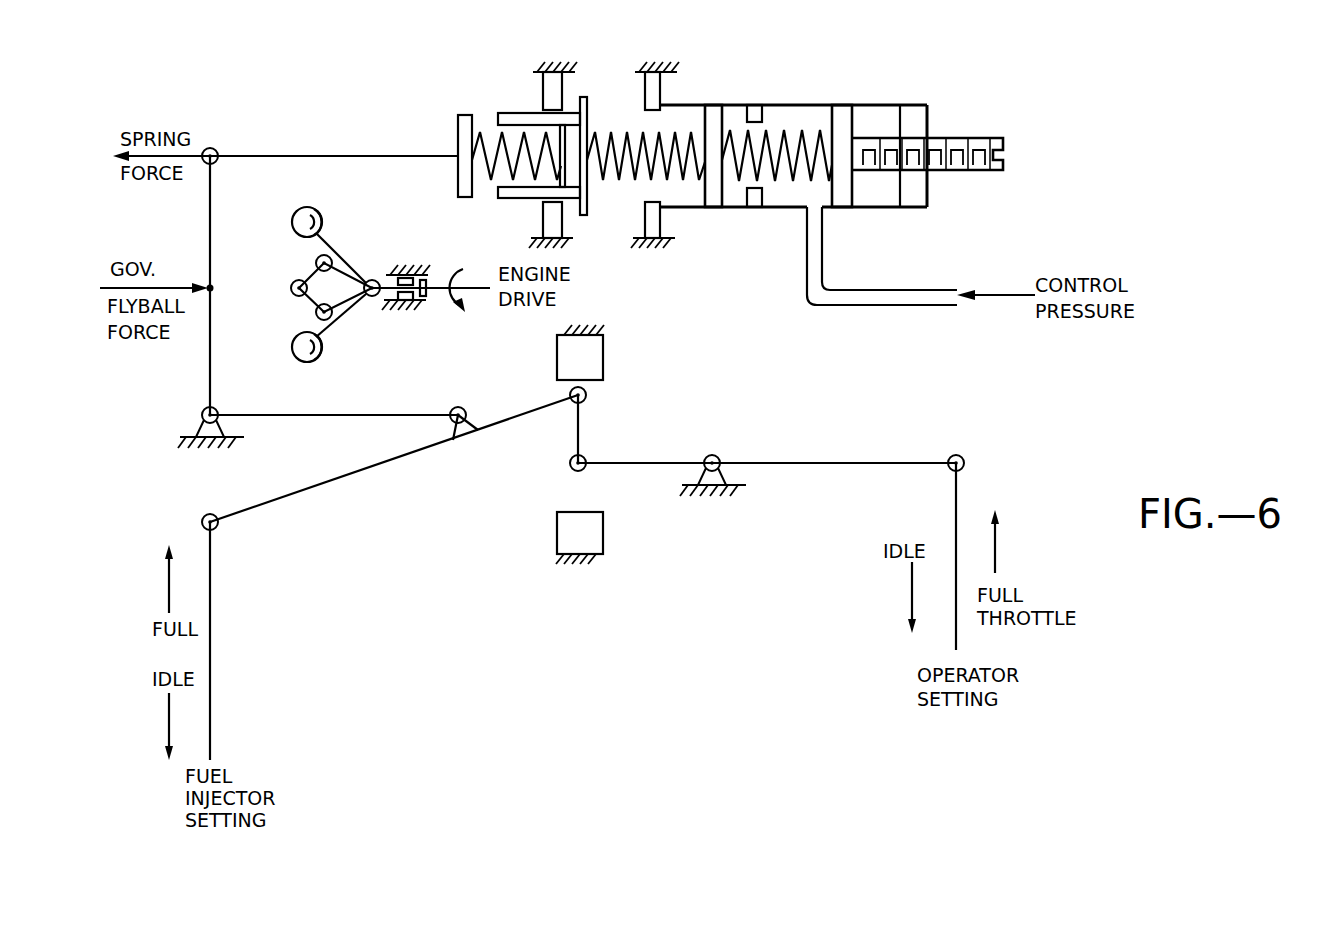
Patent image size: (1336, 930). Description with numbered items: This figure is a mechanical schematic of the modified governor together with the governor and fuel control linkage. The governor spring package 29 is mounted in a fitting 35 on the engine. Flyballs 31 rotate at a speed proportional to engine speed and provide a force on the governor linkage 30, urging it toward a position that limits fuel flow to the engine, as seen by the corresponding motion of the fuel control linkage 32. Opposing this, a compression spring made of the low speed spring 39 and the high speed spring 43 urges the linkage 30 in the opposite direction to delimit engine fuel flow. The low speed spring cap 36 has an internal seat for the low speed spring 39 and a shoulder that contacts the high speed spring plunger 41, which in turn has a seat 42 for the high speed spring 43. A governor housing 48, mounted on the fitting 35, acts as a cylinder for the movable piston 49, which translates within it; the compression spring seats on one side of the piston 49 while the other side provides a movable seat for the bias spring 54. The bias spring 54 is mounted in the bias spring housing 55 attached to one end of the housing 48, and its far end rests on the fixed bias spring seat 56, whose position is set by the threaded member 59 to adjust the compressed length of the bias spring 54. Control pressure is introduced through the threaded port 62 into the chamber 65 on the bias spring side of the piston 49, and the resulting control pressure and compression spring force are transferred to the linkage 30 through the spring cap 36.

The governor spring package 29 is at (716, 48).
The governor linkage 30 is at (312, 156).
The flyballs 31 is at (323, 222).
The fuel control linkage 32 is at (210, 560).
The fitting 35 is at (555, 72).
The low speed spring cap 36 is at (464, 115).
The low speed spring 39 is at (487, 182).
The high speed spring plunger 41 is at (587, 125).
The seat 42 is at (562, 225).
The high speed spring 43 is at (668, 135).
The governor housing 48 is at (753, 208).
The movable piston 49 is at (712, 208).
The bias spring 54 is at (775, 140).
The bias spring housing 55 is at (885, 105).
The bias spring seat 56 is at (860, 190).
The threaded member 59 is at (946, 138).
The threaded port 62 is at (807, 232).
The chamber 65 is at (812, 205).